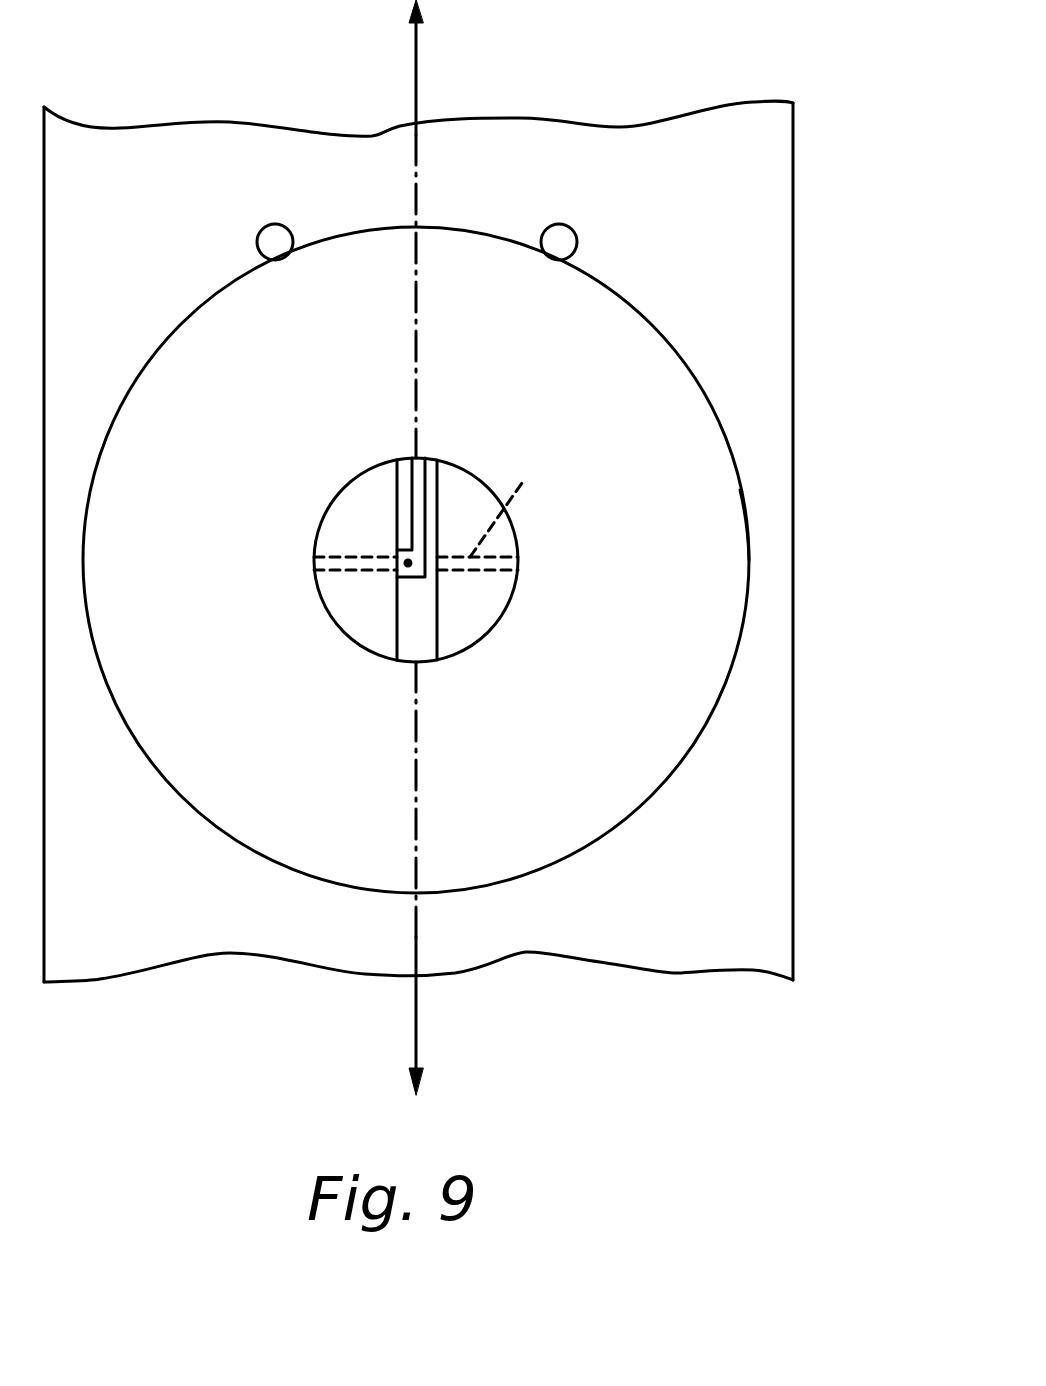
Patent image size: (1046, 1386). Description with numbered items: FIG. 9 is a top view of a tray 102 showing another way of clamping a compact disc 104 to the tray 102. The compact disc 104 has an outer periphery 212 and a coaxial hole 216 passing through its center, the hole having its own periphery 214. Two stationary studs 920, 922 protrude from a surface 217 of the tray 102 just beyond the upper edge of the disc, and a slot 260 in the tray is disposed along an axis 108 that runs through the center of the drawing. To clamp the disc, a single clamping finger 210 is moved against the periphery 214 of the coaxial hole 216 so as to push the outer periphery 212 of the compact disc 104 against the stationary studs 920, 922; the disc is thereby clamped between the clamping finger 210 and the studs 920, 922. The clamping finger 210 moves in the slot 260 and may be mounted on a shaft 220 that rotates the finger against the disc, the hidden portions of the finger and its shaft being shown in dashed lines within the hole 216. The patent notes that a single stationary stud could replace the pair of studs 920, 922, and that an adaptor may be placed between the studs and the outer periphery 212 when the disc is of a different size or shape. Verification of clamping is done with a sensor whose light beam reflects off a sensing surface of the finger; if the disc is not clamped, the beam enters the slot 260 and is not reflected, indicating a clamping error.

The tray 102 is at (690, 945).
The compact disc 104 is at (283, 397).
The axis 108 is at (417, 65).
The clamping finger 210 is at (417, 533).
The outer periphery 212 is at (752, 607).
The periphery of coaxial hole 214 is at (518, 532).
The coaxial hole 216 is at (473, 615).
The surface of the tray 217 is at (760, 185).
The shaft 220 is at (446, 508).
The slot 260 is at (426, 643).
The stationary stud 920 is at (573, 229).
The stationary stud 922 is at (261, 229).